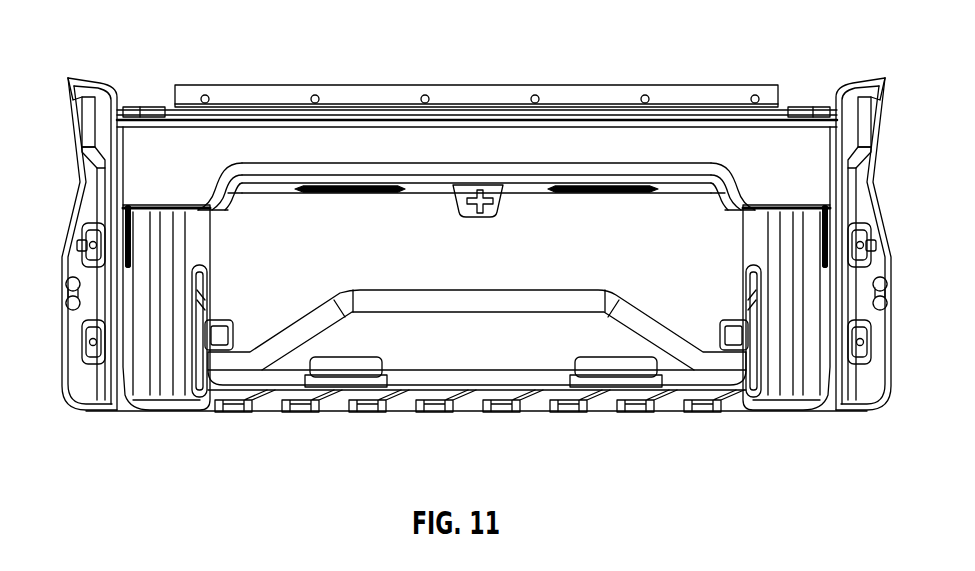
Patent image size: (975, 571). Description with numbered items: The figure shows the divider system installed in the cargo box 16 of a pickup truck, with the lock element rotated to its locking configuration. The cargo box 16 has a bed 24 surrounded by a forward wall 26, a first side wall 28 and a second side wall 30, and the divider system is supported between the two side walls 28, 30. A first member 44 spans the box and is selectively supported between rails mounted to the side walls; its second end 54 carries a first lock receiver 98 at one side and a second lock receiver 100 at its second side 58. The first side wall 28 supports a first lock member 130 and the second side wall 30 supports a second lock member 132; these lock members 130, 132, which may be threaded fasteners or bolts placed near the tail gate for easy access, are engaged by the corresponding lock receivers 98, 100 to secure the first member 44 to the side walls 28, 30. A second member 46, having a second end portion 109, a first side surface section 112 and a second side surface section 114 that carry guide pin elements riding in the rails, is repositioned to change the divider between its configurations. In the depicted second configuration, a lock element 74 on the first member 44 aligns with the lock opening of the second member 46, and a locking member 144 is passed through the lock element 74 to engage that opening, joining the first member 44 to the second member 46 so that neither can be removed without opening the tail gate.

The cargo box 16 is at (123, 97).
The bed 24 is at (480, 393).
The forward wall 26 is at (800, 108).
The first side wall 28 is at (117, 122).
The second side wall 30 is at (832, 107).
The first member 44 is at (360, 143).
The second member 46 is at (692, 312).
The second end 54 is at (563, 137).
The second side 58 is at (777, 183).
The lock element 74 is at (473, 212).
The first lock receiver 98 is at (134, 259).
The second lock receiver 100 is at (813, 258).
The second end portion 109 is at (562, 367).
The first side surface section 112 is at (220, 305).
The second side surface section 114 is at (741, 243).
The first lock member 130 is at (136, 261).
The second lock member 132 is at (809, 254).
The locking member 144 is at (488, 193).